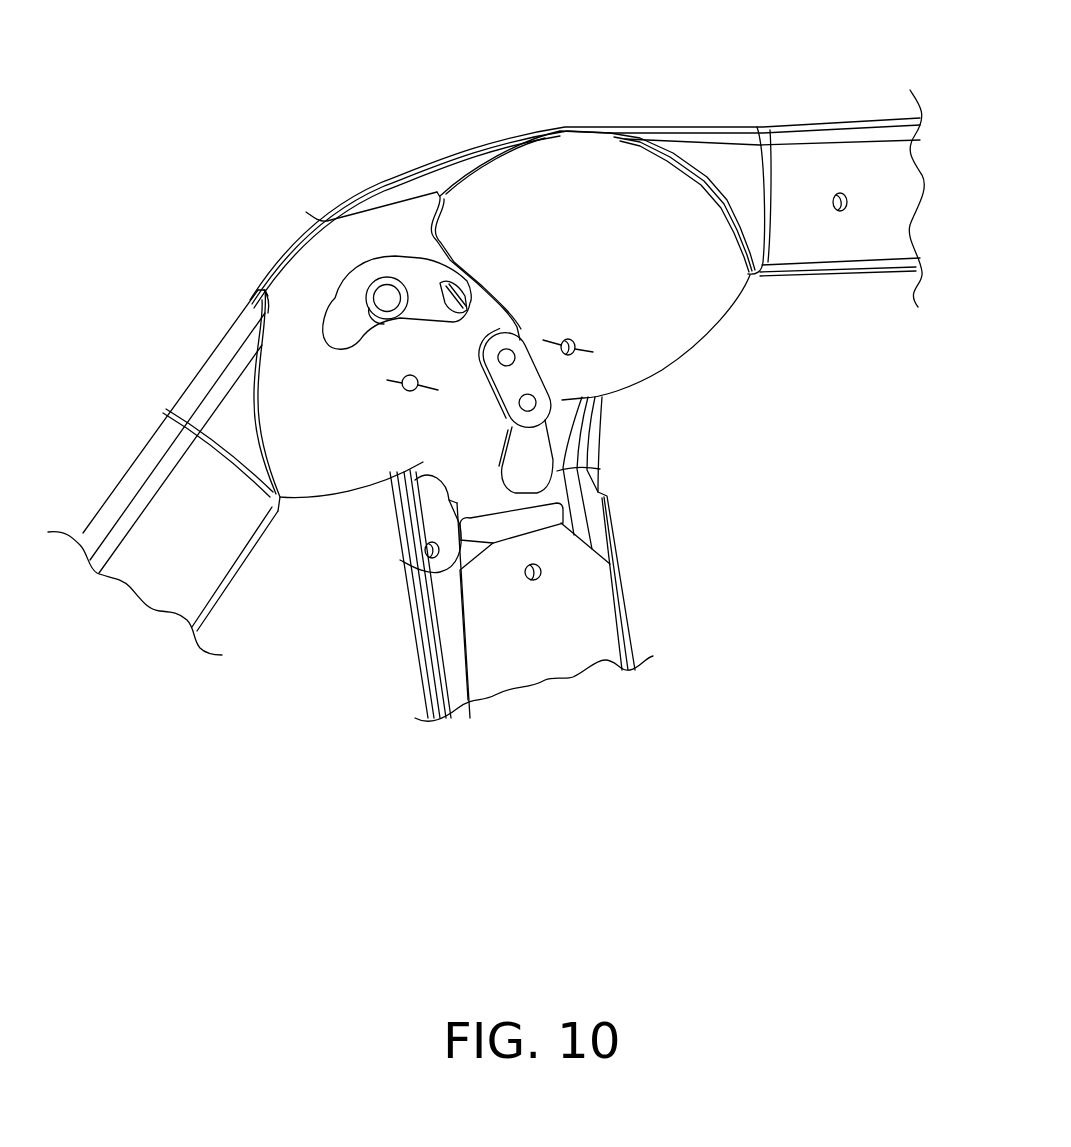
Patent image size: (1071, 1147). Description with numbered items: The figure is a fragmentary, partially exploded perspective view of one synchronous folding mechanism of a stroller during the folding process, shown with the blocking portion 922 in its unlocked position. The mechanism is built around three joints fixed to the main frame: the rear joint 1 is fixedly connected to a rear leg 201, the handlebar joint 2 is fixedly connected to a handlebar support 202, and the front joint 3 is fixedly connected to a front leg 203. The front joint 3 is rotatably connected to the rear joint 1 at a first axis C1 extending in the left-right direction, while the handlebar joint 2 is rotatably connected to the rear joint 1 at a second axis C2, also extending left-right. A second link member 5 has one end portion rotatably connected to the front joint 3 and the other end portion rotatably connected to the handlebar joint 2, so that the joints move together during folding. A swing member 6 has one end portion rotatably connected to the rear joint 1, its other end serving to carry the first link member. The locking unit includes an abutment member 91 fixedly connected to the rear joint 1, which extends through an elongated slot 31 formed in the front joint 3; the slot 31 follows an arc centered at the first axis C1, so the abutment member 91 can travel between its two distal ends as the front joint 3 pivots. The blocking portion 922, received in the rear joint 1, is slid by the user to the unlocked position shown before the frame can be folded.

The rear joint 1 is at (462, 150).
The handlebar joint 2 is at (597, 177).
The front joint 3 is at (290, 377).
The second link member 5 is at (503, 383).
The swing member 6 is at (430, 525).
The elongated slot 31 is at (410, 248).
The abutment member 91 is at (363, 285).
The rear leg 201 is at (553, 657).
The handlebar support 202 is at (805, 132).
The front leg 203 is at (157, 433).
The blocking portion 922 is at (467, 555).
The first axis C1 is at (402, 379).
The second axis C2 is at (586, 352).